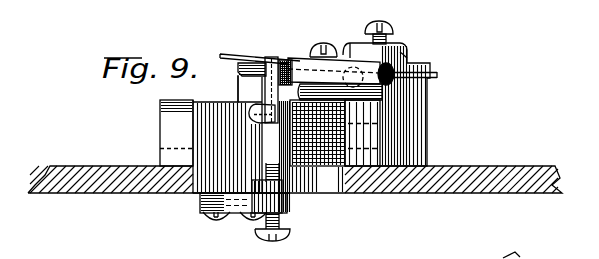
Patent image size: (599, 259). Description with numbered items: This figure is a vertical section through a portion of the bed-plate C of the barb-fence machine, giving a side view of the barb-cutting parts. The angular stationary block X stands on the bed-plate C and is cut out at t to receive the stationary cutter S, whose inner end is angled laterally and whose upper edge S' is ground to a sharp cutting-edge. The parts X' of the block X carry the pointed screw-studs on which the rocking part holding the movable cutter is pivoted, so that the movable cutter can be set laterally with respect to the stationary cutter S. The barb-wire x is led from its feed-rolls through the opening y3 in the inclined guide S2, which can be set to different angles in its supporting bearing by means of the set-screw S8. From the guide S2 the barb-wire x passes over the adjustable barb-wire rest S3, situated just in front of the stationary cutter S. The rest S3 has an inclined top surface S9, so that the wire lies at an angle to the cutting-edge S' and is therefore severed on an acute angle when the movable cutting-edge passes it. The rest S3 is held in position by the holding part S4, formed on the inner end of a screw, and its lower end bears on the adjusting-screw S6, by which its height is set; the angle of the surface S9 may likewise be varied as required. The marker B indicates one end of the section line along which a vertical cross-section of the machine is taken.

The bed-plate C is at (295, 171).
The parts of stationary block X' is at (176, 133).
The angular stationary block X is at (378, 133).
The section line marker B is at (318, 179).
The stationary cutter S is at (341, 61).
The upper cutting-edge of stationary cutter S' is at (281, 63).
The guide S2 is at (333, 60).
The adjustable barb-wire rest S3 is at (270, 83).
The holding part S4 is at (258, 113).
The adjusting-screw S6 is at (288, 224).
The set-screw S8 is at (379, 23).
The inclined top surface S9 is at (275, 59).
The cut-out of stationary block t is at (236, 72).
The barb-wire x is at (421, 70).
The opening in inclined guide y3 is at (407, 58).